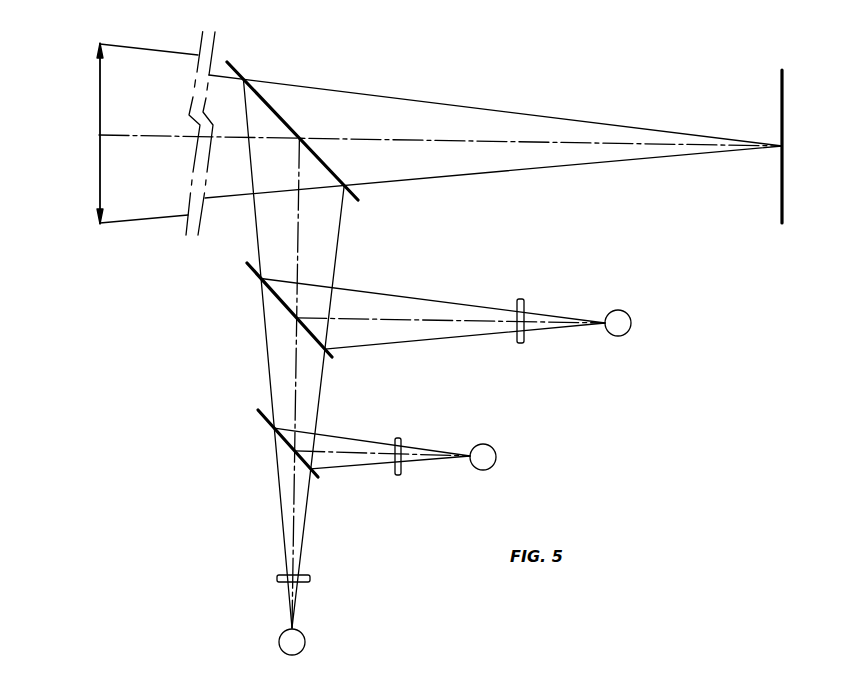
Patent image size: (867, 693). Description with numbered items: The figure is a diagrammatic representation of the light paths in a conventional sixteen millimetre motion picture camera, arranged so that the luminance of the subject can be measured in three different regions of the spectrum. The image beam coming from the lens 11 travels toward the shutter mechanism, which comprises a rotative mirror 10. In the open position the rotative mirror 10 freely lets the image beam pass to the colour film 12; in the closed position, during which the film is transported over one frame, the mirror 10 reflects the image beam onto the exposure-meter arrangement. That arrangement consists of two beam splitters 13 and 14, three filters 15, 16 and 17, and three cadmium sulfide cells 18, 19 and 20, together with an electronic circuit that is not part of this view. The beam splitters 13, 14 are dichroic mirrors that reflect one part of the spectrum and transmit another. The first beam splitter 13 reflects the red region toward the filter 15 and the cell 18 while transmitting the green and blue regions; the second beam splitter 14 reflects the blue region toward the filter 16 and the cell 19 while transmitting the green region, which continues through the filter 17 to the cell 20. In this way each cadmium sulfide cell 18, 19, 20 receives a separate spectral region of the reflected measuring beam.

The rotative mirror 10 is at (265, 97).
The lens 11 is at (100, 73).
The colour film 12 is at (782, 90).
The beam splitter 13 is at (253, 271).
The beam splitter 14 is at (260, 416).
The filter 15 is at (518, 303).
The filter 16 is at (397, 438).
The filter 17 is at (310, 576).
The cadmium sulfide cell 18 is at (623, 320).
The cadmium sulfide cell 19 is at (486, 452).
The cadmium sulfide cell 20 is at (297, 643).